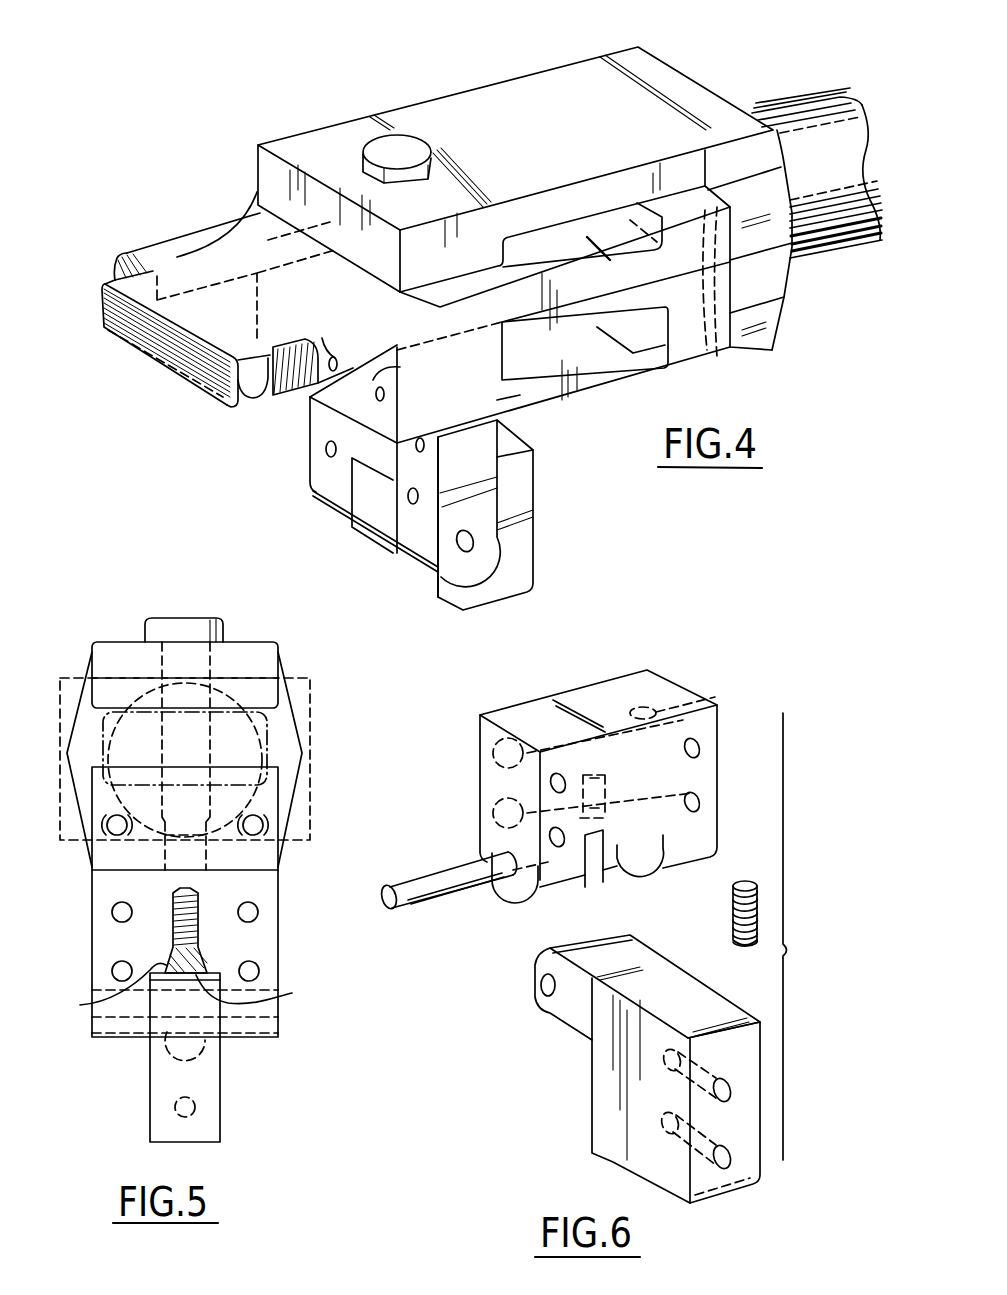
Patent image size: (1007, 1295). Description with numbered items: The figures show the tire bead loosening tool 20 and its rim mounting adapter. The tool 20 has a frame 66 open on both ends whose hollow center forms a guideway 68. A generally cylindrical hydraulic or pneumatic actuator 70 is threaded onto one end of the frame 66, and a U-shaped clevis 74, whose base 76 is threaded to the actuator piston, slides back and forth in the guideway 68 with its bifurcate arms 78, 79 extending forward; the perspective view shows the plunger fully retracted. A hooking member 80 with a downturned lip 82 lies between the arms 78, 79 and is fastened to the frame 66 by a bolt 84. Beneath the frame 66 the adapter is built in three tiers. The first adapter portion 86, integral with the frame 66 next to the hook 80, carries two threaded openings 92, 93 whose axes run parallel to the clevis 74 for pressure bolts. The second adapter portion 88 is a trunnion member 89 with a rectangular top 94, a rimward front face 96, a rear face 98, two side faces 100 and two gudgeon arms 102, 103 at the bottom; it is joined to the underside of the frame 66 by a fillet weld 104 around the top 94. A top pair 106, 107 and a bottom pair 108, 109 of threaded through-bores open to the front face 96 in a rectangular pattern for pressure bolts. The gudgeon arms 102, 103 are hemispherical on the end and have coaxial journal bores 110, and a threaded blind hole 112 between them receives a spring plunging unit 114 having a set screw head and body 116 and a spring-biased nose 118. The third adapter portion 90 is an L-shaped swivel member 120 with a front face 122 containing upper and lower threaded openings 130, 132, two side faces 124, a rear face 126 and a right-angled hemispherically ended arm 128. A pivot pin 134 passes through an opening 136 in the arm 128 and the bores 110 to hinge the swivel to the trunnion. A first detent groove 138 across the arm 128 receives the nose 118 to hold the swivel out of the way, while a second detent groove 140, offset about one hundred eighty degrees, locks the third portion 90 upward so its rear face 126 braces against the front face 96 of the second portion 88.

In FIG. 4, the tire bead loosening tool 20 is at (294, 100).
In FIG. 4, the frame 66 is at (541, 78).
In FIG. 5, the frame 66 is at (110, 652).
In FIG. 4, the guideway 68 is at (596, 352).
In FIG. 4, the actuator 70 is at (797, 100).
In FIG. 4, the clevis 74 is at (658, 362).
In FIG. 4, the base 76 is at (696, 352).
In FIG. 5, the base 76 is at (312, 682).
In FIG. 4, the arm 78 is at (287, 377).
In FIG. 4, the arm 79 is at (152, 252).
In FIG. 4, the hooking member 80 is at (207, 265).
In FIG. 4, the downturned lip 82 is at (233, 401).
In FIG. 4, the bolt 84 is at (398, 145).
In FIG. 5, the bolt 84 is at (189, 618).
In FIG. 4, the first adapter portion 86 is at (406, 377).
In FIG. 5, the first adapter portion 86 is at (268, 862).
In FIG. 4, the second adapter portion 88 is at (532, 434).
In FIG. 5, the second adapter portion 88 is at (268, 884).
In FIG. 6, the second adapter portion 88 is at (756, 778).
In FIG. 4, the trunnion member 89 is at (318, 507).
In FIG. 6, the trunnion member 89 is at (677, 880).
In FIG. 4, the third adapter portion 90 is at (542, 553).
In FIG. 5, the third adapter portion 90 is at (158, 1128).
In FIG. 6, the third adapter portion 90 is at (697, 1210).
In FIG. 4, the threaded opening 92 is at (396, 404).
In FIG. 5, the threaded opening 92 is at (258, 823).
In FIG. 4, the threaded opening 93 is at (331, 338).
In FIG. 5, the threaded opening 93 is at (107, 823).
In FIG. 6, the top 94 is at (639, 680).
In FIG. 6, the front face 96 is at (708, 717).
In FIG. 6, the rear face 98 is at (548, 696).
In FIG. 6, the side faces 100 is at (480, 734).
In FIG. 4, the gudgeon arm 102 is at (410, 543).
In FIG. 5, the gudgeon arm 102 is at (273, 1034).
In FIG. 6, the gudgeon arm 102 is at (718, 848).
In FIG. 4, the gudgeon arm 103 is at (312, 475).
In FIG. 5, the gudgeon arm 103 is at (112, 1037).
In FIG. 6, the gudgeon arm 103 is at (530, 915).
In FIG. 4, the fillet weld 104 is at (512, 402).
In FIG. 4, the threaded through-bore 106 is at (424, 440).
In FIG. 5, the threaded through-bore 106 is at (255, 915).
In FIG. 6, the threaded through-bore 106 is at (699, 748).
In FIG. 4, the threaded through-bore 107 is at (304, 419).
In FIG. 5, the threaded through-bore 107 is at (112, 908).
In FIG. 6, the threaded through-bore 107 is at (562, 784).
In FIG. 4, the threaded through-bore 108 is at (411, 487).
In FIG. 5, the threaded through-bore 108 is at (252, 970).
In FIG. 6, the threaded through-bore 108 is at (692, 802).
In FIG. 4, the threaded through-bore 109 is at (327, 448).
In FIG. 5, the threaded through-bore 109 is at (112, 968).
In FIG. 6, the threaded through-bore 109 is at (550, 838).
In FIG. 4, the journal bore 110 is at (430, 575).
In FIG. 6, the journal bore 110 is at (628, 893).
In FIG. 5, the threaded blind hole 112 is at (200, 955).
In FIG. 6, the threaded blind hole 112 is at (512, 794).
In FIG. 5, the spring plunging unit 114 is at (173, 949).
In FIG. 6, the spring plunging unit 114 is at (776, 913).
In FIG. 6, the set screw head and body 116 is at (760, 900).
In FIG. 5, the spring-biased nose 118 is at (273, 996).
In FIG. 6, the spring-biased nose 118 is at (742, 965).
In FIG. 6, the swivel member 120 is at (570, 1052).
In FIG. 6, the front face 122 is at (748, 1050).
In FIG. 4, the side faces 124 is at (522, 505).
In FIG. 6, the side faces 124 is at (600, 1118).
In FIG. 6, the rear face 126 is at (588, 1091).
In FIG. 4, the arm 128 is at (362, 521).
In FIG. 6, the arm 128 is at (582, 1013).
In FIG. 5, the threaded opening 130 is at (197, 1106).
In FIG. 6, the threaded opening 130 is at (740, 1155).
In FIG. 5, the threaded opening 132 is at (212, 1072).
In FIG. 6, the threaded opening 132 is at (735, 1088).
In FIG. 4, the pivot pin 134 is at (476, 540).
In FIG. 6, the pivot pin 134 is at (458, 900).
In FIG. 6, the opening 136 is at (540, 986).
In FIG. 5, the first detent groove 138 is at (82, 1005).
In FIG. 6, the first detent groove 138 is at (623, 926).
In FIG. 6, the second detent groove 140 is at (556, 1016).